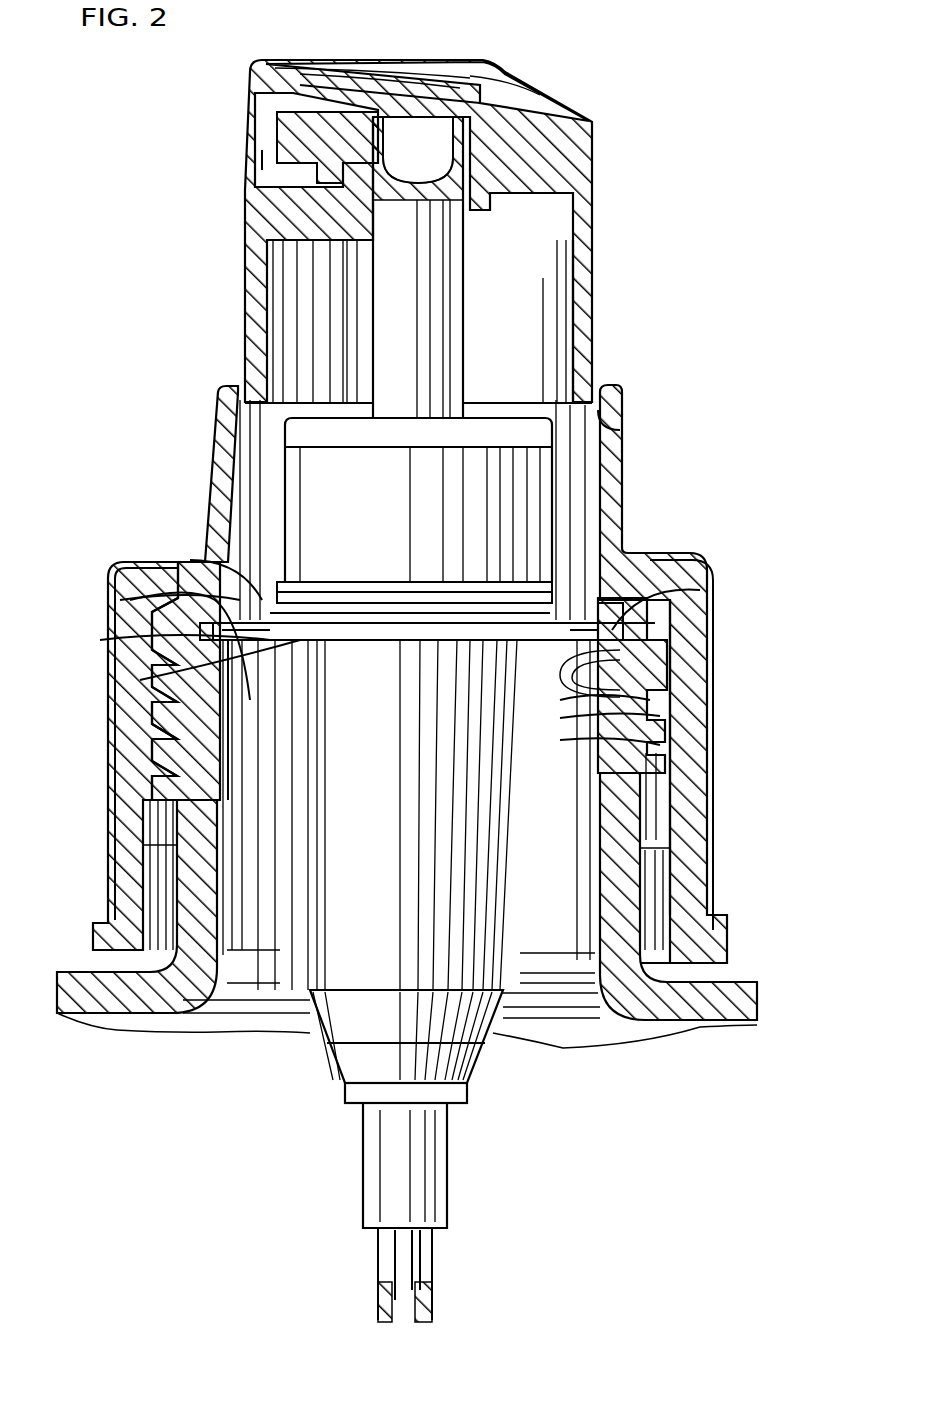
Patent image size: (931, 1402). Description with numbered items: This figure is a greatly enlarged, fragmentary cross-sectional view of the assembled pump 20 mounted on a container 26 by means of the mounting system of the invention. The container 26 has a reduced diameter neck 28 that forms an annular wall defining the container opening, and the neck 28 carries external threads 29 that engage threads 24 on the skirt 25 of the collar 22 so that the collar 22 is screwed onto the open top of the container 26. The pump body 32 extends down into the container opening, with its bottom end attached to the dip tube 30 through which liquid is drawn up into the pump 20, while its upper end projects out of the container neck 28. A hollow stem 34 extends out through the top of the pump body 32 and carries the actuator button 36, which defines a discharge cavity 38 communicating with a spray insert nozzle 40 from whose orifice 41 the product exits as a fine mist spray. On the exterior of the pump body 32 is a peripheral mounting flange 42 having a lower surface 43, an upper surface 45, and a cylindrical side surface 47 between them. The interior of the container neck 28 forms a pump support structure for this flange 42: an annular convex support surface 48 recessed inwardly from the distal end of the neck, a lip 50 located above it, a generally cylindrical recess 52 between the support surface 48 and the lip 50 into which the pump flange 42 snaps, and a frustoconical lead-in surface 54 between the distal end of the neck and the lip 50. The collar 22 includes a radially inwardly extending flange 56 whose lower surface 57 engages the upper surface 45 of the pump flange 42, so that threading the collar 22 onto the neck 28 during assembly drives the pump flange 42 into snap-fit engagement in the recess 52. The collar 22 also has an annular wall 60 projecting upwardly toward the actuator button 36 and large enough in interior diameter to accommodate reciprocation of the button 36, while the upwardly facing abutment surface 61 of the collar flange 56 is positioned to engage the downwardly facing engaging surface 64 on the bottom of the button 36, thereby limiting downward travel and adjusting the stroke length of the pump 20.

The pump 20 is at (603, 125).
The collar 22 is at (710, 560).
The threads 24 is at (662, 800).
The skirt 25 is at (697, 745).
The container 26 is at (747, 978).
The container neck 28 is at (652, 882).
The external threads 29 is at (655, 720).
The dip tube 30 is at (432, 1260).
The pump body 32 is at (552, 505).
The hollow stem 34 is at (472, 328).
The actuator button 36 is at (583, 160).
The discharge cavity 38 is at (388, 118).
The spray insert nozzle 40 is at (262, 182).
The orifice 41 is at (268, 140).
The pump body flange 42 is at (160, 784).
The lower surface 43 is at (347, 650).
The upper surface 45 is at (347, 620).
The cylindrical side surface 47 is at (202, 636).
The support surface 48 is at (243, 648).
The lip 50 is at (212, 547).
The cylindrical recess 52 is at (248, 605).
The frustoconical lead-in surface 54 is at (218, 595).
The collar flange 56 is at (595, 557).
The lower surface 57 is at (298, 615).
The annular wall 60 is at (612, 455).
The abutment surface 61 is at (270, 605).
The engaging surface 64 is at (606, 425).